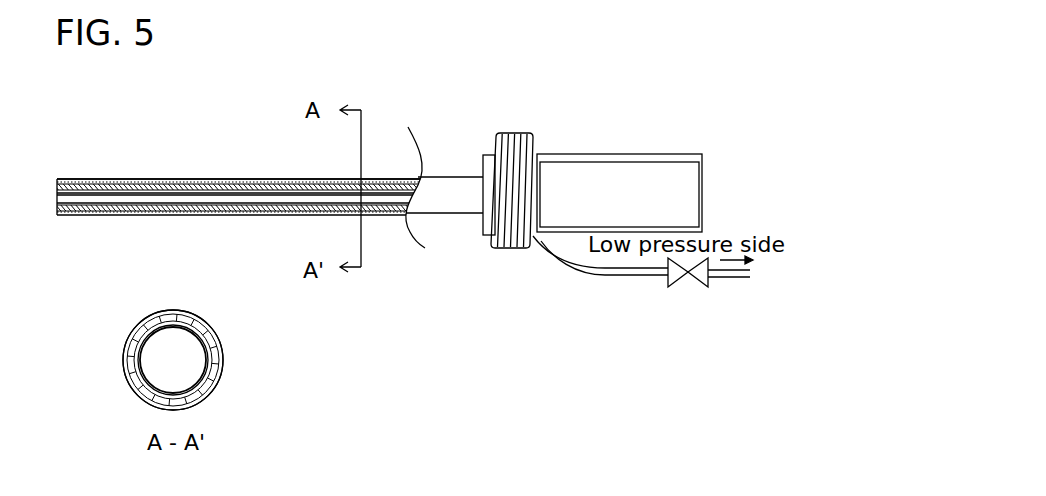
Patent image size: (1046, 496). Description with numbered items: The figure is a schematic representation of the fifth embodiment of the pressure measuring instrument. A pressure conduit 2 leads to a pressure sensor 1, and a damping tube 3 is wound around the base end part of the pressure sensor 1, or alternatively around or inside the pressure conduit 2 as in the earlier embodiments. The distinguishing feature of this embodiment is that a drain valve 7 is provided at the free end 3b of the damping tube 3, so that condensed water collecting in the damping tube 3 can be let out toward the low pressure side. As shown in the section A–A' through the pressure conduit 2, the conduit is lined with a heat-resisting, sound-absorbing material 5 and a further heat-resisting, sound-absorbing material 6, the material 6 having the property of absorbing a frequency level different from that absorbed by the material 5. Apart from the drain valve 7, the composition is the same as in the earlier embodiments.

The pressure sensor 1 is at (630, 182).
The pressure conduit 2 is at (197, 217).
The damping tube 3 is at (512, 122).
The free end 3b is at (554, 258).
The heat-resisting, sound-absorbing material 5 is at (163, 181).
The heat-resisting, sound-absorbing material 6 is at (234, 179).
The drain valve 7 is at (688, 290).